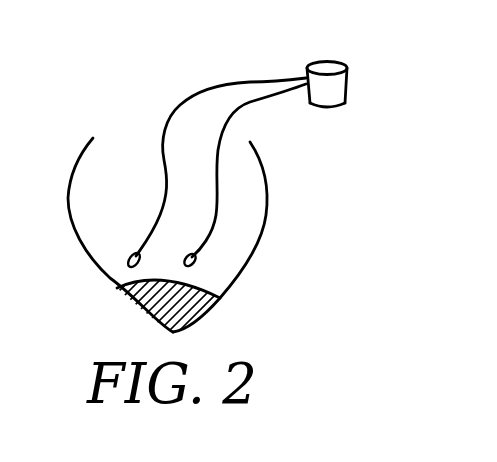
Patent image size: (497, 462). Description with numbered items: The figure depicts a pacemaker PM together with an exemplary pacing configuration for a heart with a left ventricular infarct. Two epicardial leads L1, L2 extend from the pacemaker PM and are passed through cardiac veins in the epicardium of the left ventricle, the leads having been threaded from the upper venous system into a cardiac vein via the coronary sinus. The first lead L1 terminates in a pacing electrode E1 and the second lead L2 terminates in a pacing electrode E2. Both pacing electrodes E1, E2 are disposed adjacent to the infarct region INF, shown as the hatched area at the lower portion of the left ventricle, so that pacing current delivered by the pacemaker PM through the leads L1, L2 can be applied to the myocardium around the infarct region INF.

The lead L1 is at (218, 81).
The lead L2 is at (230, 117).
The pacemaker PM is at (348, 85).
The pacing electrode E1 is at (131, 253).
The pacing electrode E2 is at (197, 262).
The infarct region INF is at (203, 320).